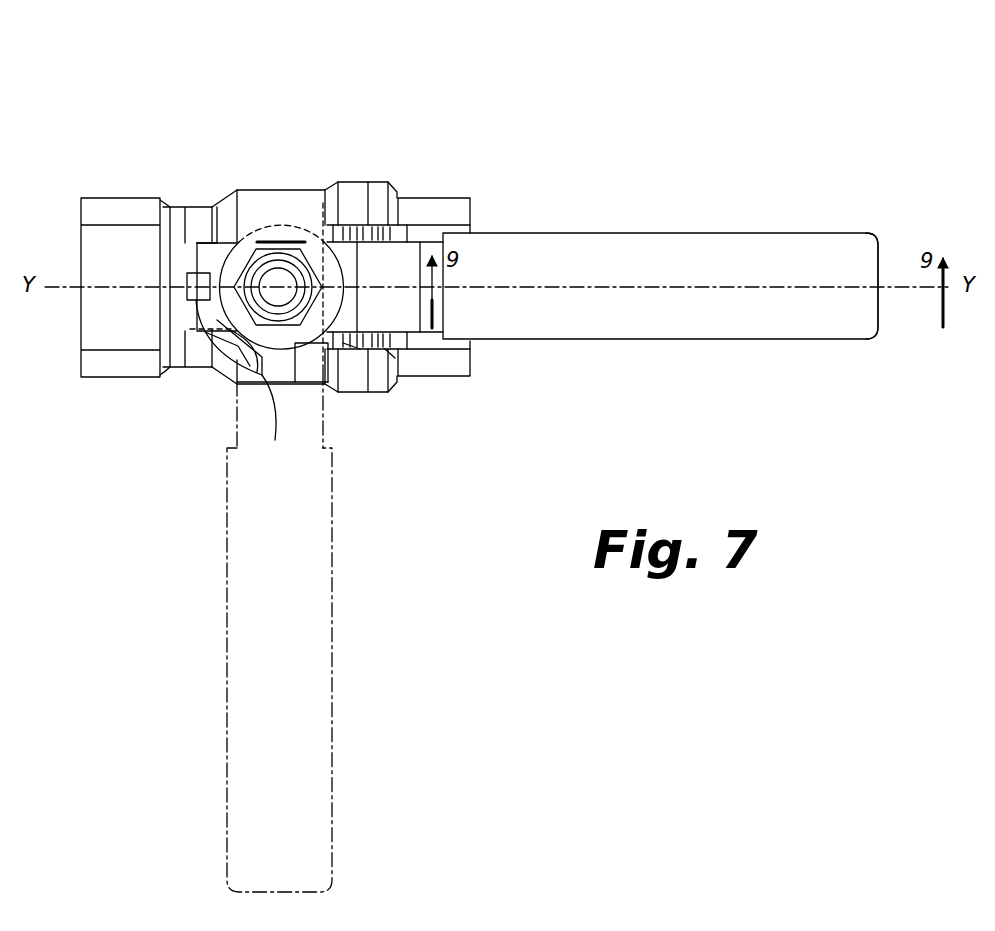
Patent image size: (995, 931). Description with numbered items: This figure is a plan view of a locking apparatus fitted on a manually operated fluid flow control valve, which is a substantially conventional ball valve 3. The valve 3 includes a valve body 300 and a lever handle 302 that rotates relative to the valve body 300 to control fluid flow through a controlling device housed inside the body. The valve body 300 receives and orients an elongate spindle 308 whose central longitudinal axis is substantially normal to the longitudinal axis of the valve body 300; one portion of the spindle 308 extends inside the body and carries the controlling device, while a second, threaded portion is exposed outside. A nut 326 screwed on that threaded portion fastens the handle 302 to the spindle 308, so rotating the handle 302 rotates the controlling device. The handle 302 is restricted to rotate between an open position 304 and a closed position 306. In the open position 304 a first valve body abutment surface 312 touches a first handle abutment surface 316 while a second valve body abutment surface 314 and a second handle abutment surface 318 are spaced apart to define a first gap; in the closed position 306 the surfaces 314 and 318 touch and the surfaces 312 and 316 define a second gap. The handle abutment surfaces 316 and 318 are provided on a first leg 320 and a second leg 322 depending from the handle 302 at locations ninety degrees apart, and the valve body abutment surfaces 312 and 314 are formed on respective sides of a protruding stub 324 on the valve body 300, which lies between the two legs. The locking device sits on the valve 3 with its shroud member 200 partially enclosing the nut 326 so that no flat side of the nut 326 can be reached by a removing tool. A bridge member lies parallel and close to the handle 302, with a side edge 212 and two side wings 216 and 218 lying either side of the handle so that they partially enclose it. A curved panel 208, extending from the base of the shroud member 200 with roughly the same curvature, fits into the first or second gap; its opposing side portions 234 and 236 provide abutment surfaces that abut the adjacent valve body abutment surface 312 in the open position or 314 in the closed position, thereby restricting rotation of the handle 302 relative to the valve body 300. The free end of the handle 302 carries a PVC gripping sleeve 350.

The ball valve 3 is at (110, 96).
The shroud member 200 is at (300, 208).
The curved panel 208 is at (230, 340).
The side edge 212 is at (392, 357).
The side wing 216 is at (352, 345).
The side wing 218 is at (385, 230).
The side portion 234 is at (266, 372).
The side portion 236 is at (195, 308).
The valve body 300 is at (374, 178).
The lever handle 302 is at (613, 363).
The open position 304 is at (780, 362).
The closed position 306 is at (357, 822).
The spindle 308 is at (278, 280).
The first valve body abutment surface 312 is at (190, 242).
The second valve body abutment surface 314 is at (430, 232).
The first handle abutment surface 316 is at (193, 250).
The second handle abutment surface 318 is at (323, 437).
The first leg 320 is at (203, 235).
The second leg 322 is at (323, 382).
The protruding stub 324 is at (190, 292).
The nut 326 is at (315, 235).
The gripping sleeve 350 is at (812, 240).